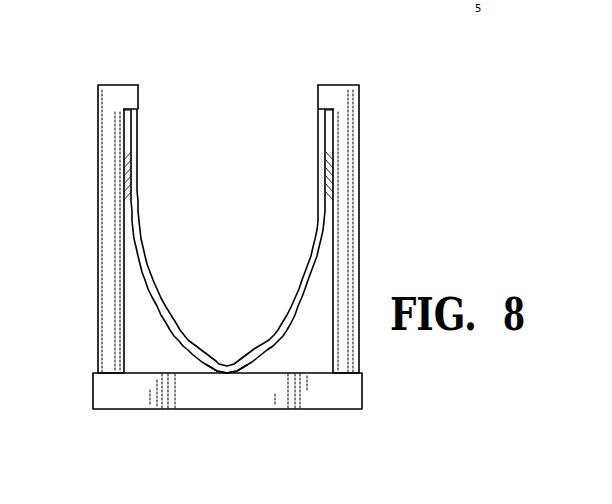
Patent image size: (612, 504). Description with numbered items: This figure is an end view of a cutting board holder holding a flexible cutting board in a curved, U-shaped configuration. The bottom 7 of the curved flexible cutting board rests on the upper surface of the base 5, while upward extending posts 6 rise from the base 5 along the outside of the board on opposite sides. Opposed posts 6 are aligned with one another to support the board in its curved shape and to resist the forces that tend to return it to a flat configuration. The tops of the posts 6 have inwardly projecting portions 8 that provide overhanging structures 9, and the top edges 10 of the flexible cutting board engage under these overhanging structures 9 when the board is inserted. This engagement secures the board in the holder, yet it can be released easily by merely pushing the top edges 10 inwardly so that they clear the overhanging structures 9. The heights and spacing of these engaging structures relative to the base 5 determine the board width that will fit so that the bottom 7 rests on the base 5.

The base 5 is at (173, 419).
The upward extending posts 6 is at (89, 155).
The bottom 7 is at (229, 386).
The inwardly projecting portions 8 is at (123, 70).
The overhanging structures 9 is at (309, 114).
The top edges 10 is at (315, 131).